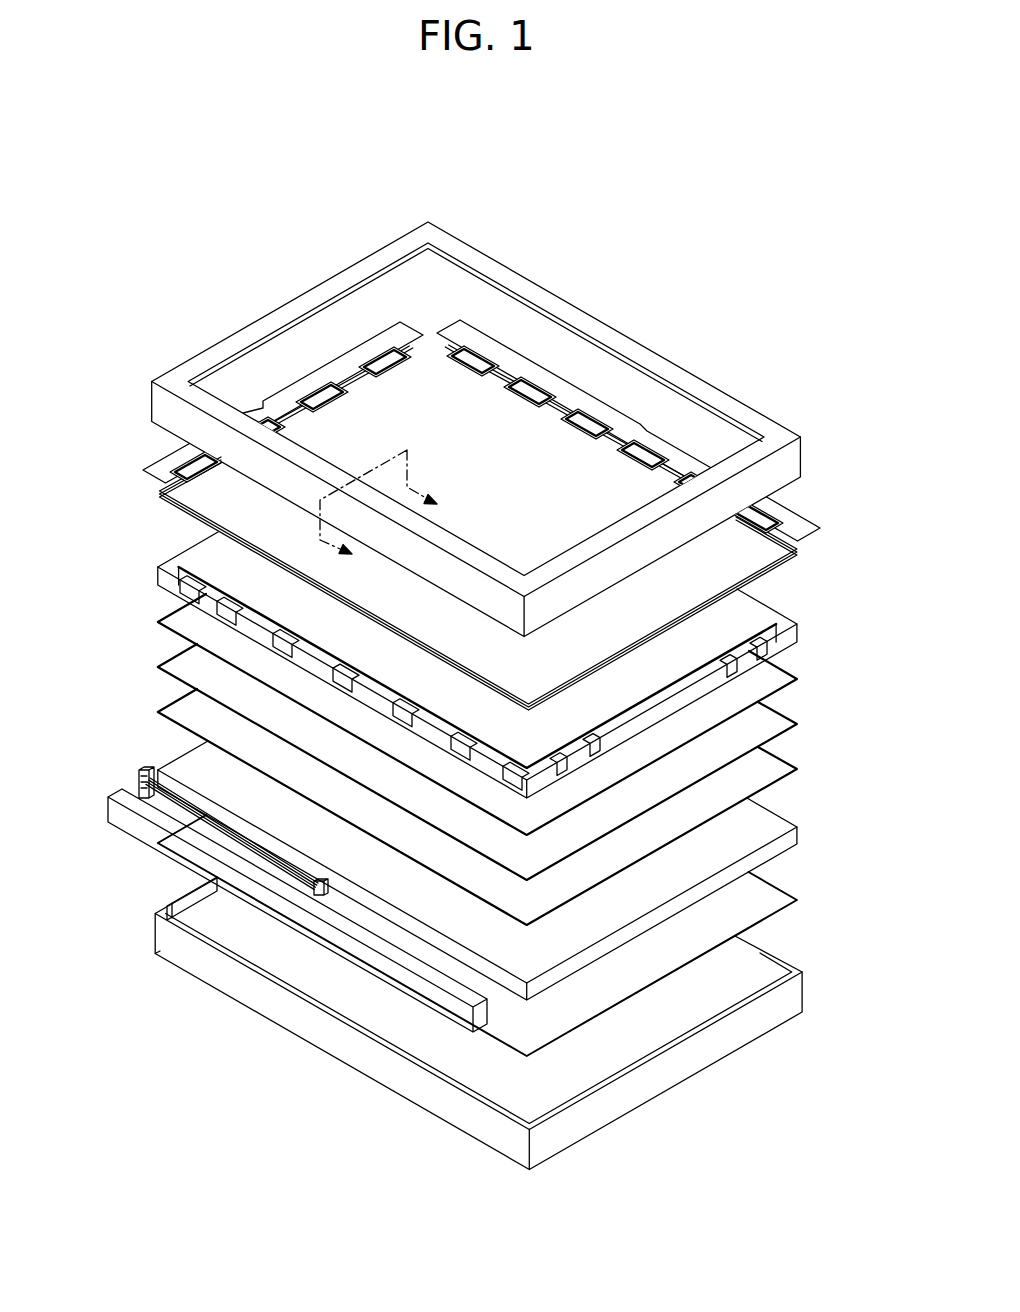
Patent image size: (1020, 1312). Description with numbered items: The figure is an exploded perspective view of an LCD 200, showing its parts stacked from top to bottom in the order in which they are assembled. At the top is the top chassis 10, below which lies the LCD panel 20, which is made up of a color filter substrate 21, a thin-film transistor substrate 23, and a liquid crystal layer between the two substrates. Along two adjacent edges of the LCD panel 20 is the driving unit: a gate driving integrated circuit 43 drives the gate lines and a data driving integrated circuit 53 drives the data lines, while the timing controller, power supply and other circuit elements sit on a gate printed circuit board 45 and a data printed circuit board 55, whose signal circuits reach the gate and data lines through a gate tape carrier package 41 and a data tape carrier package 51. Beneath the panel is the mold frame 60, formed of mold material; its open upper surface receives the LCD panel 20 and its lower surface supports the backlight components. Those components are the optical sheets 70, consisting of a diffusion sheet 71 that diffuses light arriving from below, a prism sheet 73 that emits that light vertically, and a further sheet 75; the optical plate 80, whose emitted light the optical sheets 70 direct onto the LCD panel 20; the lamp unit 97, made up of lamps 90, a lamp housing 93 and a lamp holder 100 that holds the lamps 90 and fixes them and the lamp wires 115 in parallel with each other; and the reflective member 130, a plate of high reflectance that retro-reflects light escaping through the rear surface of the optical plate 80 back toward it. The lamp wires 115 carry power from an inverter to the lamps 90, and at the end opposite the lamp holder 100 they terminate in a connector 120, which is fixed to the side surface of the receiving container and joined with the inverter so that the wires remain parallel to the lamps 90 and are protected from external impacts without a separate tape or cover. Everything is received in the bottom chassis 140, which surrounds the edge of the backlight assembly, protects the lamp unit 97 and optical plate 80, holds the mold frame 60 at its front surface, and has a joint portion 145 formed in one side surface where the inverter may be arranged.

The LCD 200 is at (852, 209).
The top chassis 10 is at (795, 458).
The LCD panel 20 is at (545, 583).
The color filter substrate 21 is at (745, 570).
The thin-film transistor substrate 23 is at (800, 556).
The gate tape carrier package 41 is at (190, 457).
The gate driving integrated circuit 43 is at (183, 467).
The gate printed circuit board 45 is at (153, 483).
The data tape carrier package 51 is at (760, 512).
The data driving integrated circuit 53 is at (770, 525).
The data printed circuit board 55 is at (803, 543).
The mold frame 60 is at (797, 637).
The optical sheet(s) 70 is at (544, 759).
The diffusion sheet 71 is at (888, 688).
The prism sheet 73 is at (797, 728).
The protection sheet 75 is at (797, 683).
The optical plate 80 is at (797, 835).
The lamps 90 is at (168, 790).
The lamp housing 93 is at (317, 888).
The lamp unit 97 is at (256, 870).
The lamp holder 100 is at (139, 776).
The lamp wires 115 is at (240, 848).
The connector 120 is at (168, 917).
The reflective member 130 is at (790, 890).
The bottom chassis 140 is at (478, 1023).
The joint portion 145 is at (156, 942).